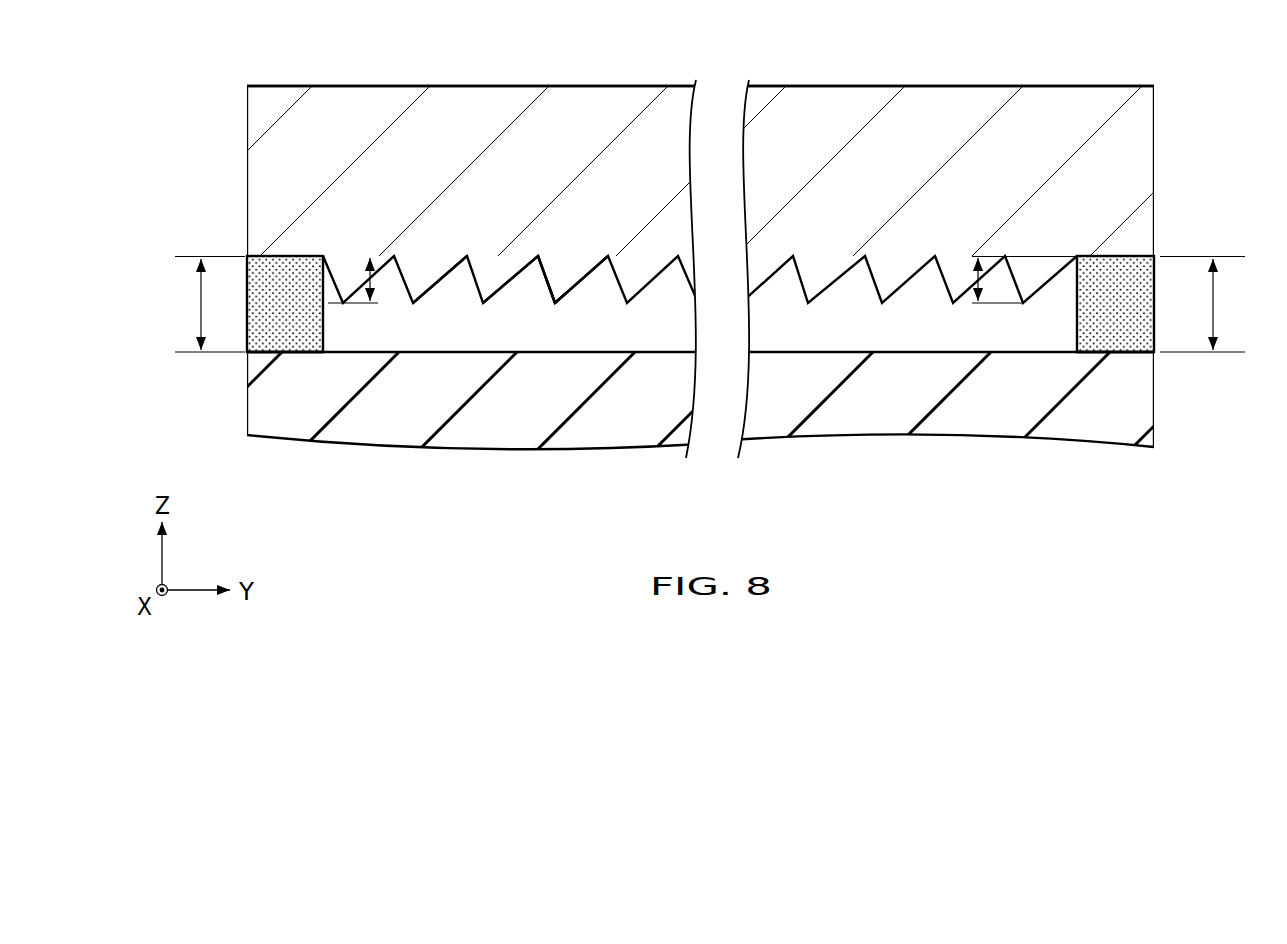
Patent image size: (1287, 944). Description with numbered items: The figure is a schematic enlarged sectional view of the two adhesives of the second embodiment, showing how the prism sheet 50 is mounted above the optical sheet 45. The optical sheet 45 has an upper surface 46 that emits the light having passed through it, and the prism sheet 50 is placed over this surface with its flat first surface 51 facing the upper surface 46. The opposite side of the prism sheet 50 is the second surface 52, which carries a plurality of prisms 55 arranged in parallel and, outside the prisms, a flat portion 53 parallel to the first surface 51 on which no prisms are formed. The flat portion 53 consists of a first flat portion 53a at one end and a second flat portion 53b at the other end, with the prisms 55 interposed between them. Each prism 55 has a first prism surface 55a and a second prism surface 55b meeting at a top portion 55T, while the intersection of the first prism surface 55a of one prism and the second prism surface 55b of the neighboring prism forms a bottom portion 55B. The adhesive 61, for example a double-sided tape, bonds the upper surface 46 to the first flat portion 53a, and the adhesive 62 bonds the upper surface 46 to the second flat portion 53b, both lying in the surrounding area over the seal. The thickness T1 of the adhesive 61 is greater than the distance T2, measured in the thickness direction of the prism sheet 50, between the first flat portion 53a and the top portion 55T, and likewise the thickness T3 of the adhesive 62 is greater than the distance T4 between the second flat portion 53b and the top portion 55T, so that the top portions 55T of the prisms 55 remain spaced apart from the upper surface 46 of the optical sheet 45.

The optical sheet 45 is at (855, 410).
The upper surface 46 is at (917, 349).
The prism sheet 50 is at (797, 118).
The first surface 51 is at (867, 78).
The second surface 52 is at (462, 287).
The flat portion 53 is at (702, 285).
The first flat portion 53a is at (283, 262).
The second flat portion 53b is at (1123, 262).
The prism 55 is at (578, 262).
The bottom portion 55B is at (537, 259).
The top portion 55T is at (560, 312).
The first prism surface 55a is at (578, 295).
The second prism surface 55b is at (543, 295).
The adhesive 61 is at (258, 347).
The adhesive 62 is at (1123, 345).
The thickness T1 is at (207, 305).
The distance T2 is at (365, 283).
The thickness T3 is at (1202, 305).
The distance T4 is at (1011, 280).